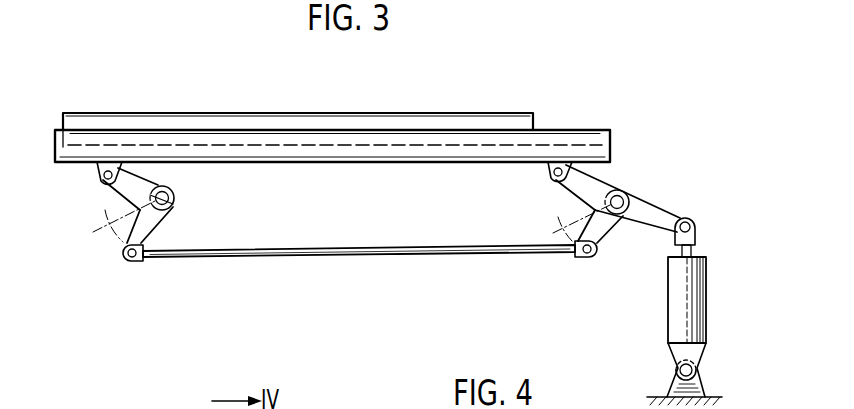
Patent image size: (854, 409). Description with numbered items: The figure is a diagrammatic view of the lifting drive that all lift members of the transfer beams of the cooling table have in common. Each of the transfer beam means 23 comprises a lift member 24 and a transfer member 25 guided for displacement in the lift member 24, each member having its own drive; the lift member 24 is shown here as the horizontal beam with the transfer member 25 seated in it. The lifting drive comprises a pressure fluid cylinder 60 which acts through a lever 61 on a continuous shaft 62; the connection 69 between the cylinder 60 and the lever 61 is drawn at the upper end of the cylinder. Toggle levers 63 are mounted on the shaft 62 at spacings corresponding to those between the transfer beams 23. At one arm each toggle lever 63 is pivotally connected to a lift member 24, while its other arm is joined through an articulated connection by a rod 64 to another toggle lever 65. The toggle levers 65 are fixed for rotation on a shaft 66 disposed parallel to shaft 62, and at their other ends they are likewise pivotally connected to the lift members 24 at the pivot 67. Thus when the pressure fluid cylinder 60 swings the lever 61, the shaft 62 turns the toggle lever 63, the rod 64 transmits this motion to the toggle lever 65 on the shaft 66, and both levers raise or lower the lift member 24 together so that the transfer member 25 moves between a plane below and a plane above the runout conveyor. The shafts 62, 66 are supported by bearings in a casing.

The transfer beam means 23 is at (491, 104).
The lift member 24 is at (295, 151).
The transfer member 25 is at (178, 122).
The pressure fluid cylinder 60 is at (672, 307).
The lever 61 is at (655, 213).
The continuous shaft 62 is at (617, 202).
The toggle lever 63 is at (611, 245).
The rod 64 is at (403, 258).
The toggle lever 65 is at (124, 239).
The shaft 66 is at (183, 210).
The pivotal connection 67 is at (101, 178).
The clevis 69 is at (697, 250).